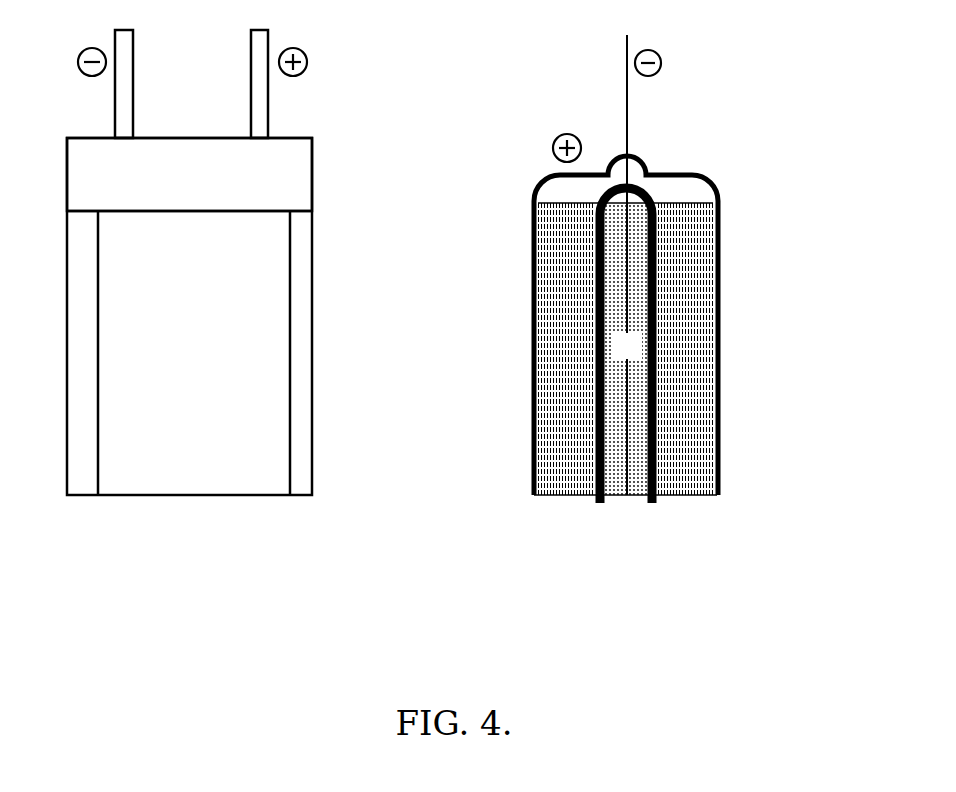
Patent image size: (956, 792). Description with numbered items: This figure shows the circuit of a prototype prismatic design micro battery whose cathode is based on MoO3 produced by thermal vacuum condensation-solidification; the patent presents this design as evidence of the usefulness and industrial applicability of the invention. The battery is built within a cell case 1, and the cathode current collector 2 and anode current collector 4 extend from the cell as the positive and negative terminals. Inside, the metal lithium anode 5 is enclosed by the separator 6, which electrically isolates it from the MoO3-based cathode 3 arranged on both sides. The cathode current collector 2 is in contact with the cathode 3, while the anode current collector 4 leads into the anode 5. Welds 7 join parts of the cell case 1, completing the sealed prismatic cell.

The cell case 1 is at (259, 315).
The cathode current collector 2 is at (268, 120).
The cathode 3 is at (683, 460).
The anode current collector 4 is at (133, 93).
The anode 5 is at (715, 349).
The separator 6 is at (655, 281).
The welds 7 is at (83, 297).